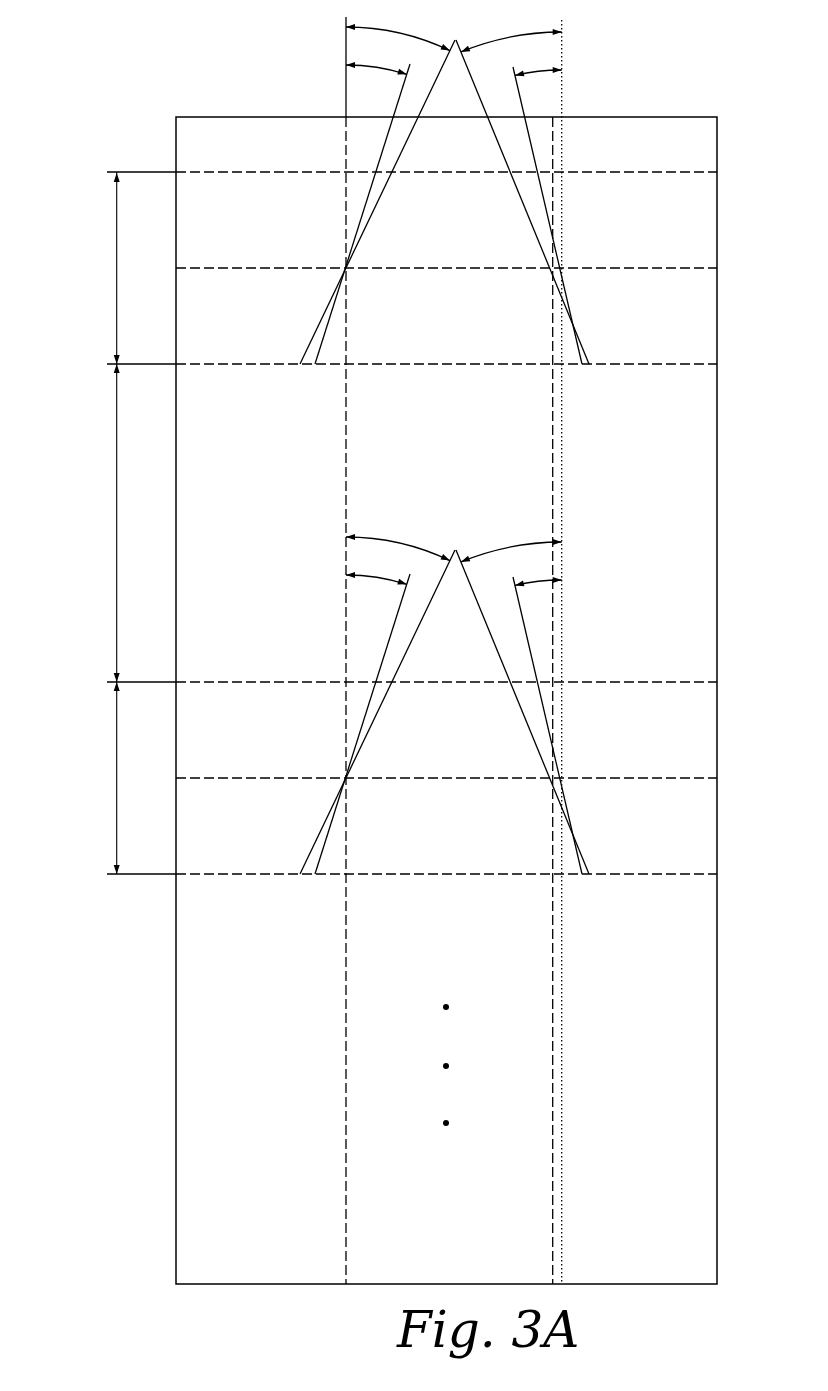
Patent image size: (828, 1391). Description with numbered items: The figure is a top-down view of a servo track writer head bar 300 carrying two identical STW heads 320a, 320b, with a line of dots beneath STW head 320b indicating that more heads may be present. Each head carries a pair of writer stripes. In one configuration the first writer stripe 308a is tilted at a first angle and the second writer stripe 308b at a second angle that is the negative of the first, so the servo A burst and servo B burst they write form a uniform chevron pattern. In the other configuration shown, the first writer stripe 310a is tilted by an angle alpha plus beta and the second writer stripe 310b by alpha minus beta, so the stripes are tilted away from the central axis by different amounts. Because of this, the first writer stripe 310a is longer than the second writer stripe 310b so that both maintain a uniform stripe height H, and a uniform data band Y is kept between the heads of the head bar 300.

The STW head bar 300 is at (125, 80).
The first writer stripe 308a is at (328, 320).
The second writer stripe 308b is at (526, 203).
The first writer stripe 310a is at (327, 322).
The second writer stripe 310b is at (565, 295).
The STW head 320a is at (585, 92).
The STW head 320b is at (585, 602).